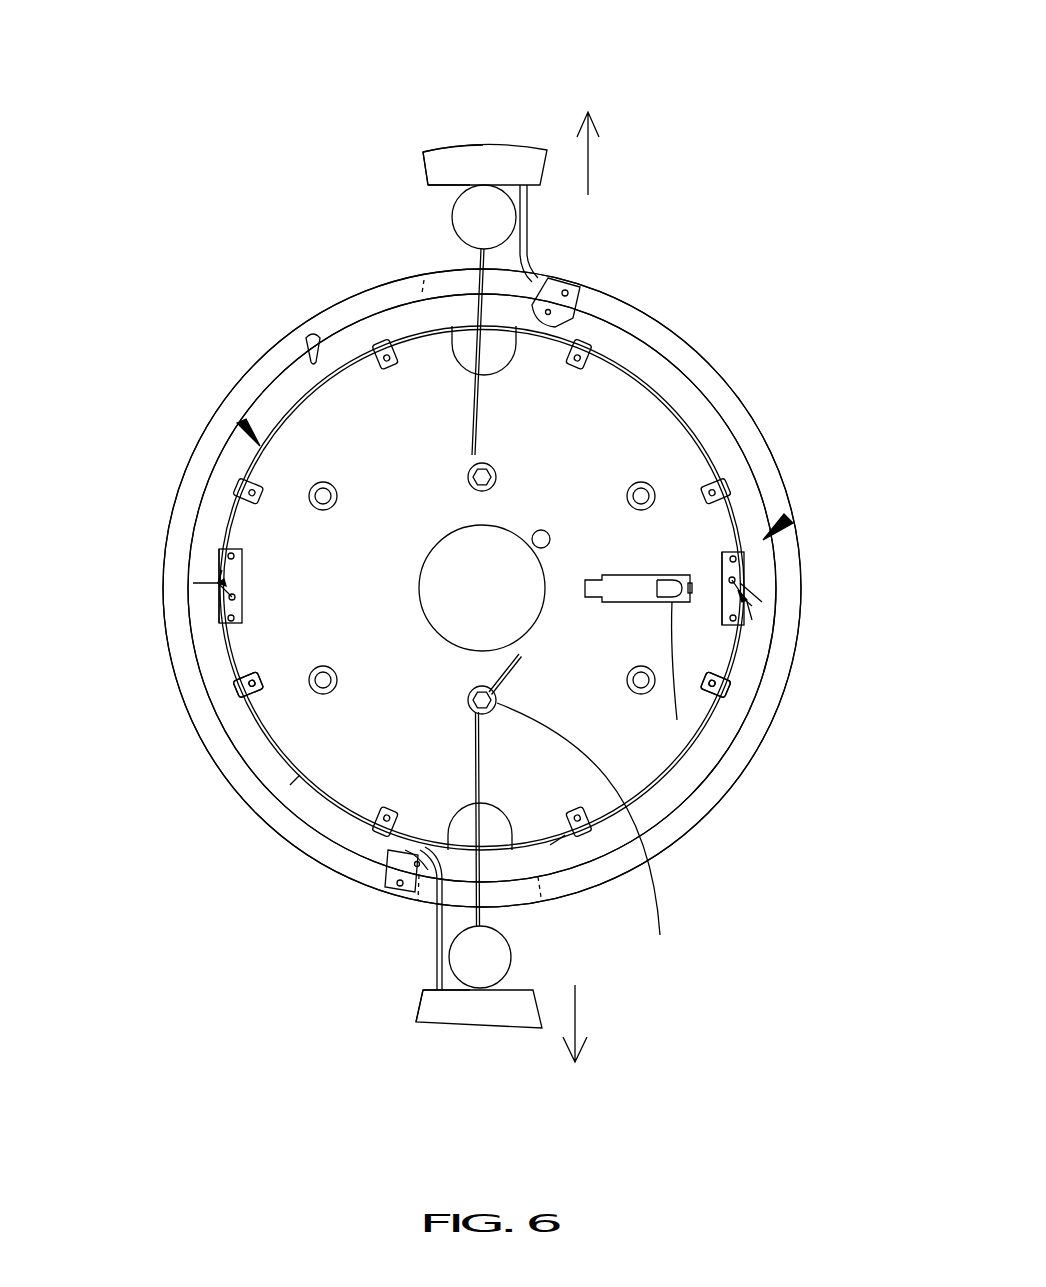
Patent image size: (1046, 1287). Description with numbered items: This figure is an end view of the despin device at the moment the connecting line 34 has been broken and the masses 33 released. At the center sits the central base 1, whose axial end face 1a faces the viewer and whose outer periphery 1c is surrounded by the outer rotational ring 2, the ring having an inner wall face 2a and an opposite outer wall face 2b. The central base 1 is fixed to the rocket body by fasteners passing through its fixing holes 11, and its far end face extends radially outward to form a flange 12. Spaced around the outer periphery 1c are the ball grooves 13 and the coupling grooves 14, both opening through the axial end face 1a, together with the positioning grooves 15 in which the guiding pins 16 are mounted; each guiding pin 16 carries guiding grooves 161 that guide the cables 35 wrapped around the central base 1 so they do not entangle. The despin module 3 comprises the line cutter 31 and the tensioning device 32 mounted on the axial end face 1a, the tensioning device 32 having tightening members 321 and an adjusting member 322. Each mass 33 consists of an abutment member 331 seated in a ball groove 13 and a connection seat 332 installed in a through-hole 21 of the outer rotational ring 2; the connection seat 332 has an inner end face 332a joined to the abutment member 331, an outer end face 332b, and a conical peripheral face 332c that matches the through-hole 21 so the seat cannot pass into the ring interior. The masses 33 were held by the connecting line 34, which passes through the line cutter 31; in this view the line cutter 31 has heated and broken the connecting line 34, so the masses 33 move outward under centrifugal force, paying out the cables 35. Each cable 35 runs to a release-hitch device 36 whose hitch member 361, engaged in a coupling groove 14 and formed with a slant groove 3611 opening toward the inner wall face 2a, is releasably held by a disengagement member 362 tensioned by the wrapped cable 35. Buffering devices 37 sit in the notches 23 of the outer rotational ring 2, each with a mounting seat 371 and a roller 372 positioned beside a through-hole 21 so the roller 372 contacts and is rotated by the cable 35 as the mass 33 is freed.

The central base 1 is at (240, 423).
The axial end face 1a is at (585, 837).
The outer periphery 1c is at (557, 838).
The outer rotational ring 2 is at (212, 292).
The inner wall face 2a is at (310, 340).
The outer wall face 2b is at (260, 355).
The despin module 3 is at (793, 522).
The fixing holes 11 is at (713, 430).
The flange 12 is at (727, 427).
The ball grooves 13 is at (452, 340).
The coupling grooves 14 is at (245, 600).
The positioning grooves 15 is at (240, 502).
The guiding pins 16 is at (238, 484).
The guiding grooves 161 is at (236, 482).
The through-holes 21 is at (540, 282).
The notches 23 is at (383, 877).
The line cutter 31 is at (652, 488).
The tensioning device 32 is at (622, 760).
The tightening members 321 is at (600, 792).
The adjusting member 322 is at (677, 720).
The masses 33 is at (414, 578).
The abutment member 331 is at (487, 203).
The connection seat 332 is at (472, 158).
The inner end face 332a is at (445, 186).
The outer end face 332b is at (443, 150).
The peripheral face 332c is at (423, 167).
The connecting line 34 is at (548, 533).
The cables 35 is at (295, 780).
The release-hitch devices 36 is at (500, 632).
The hitch member 361 is at (223, 620).
The disengagement member 362 is at (217, 603).
The slant groove 3611 is at (218, 583).
The buffering devices 37 is at (316, 918).
The mounting seat 371 is at (395, 893).
The roller 372 is at (414, 864).